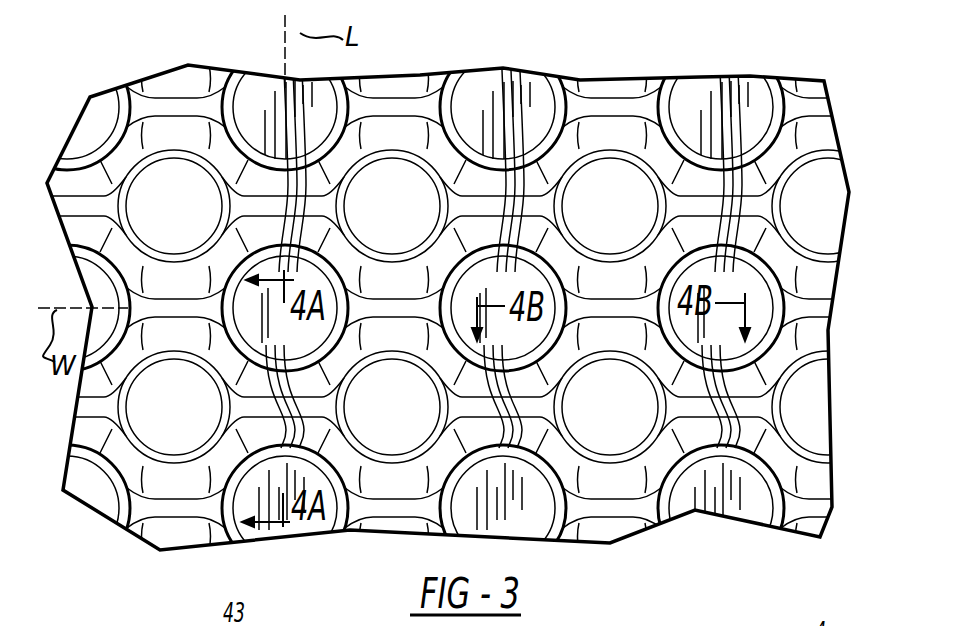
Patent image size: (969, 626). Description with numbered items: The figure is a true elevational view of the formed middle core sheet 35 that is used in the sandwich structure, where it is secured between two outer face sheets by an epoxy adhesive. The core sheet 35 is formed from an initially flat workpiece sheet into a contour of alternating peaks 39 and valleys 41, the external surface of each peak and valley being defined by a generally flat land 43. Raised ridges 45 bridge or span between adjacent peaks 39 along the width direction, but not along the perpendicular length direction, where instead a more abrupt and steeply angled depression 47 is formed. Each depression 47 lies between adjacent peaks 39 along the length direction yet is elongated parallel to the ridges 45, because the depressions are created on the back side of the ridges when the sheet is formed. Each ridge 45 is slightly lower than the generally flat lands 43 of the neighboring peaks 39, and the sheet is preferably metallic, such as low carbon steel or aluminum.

The middle core sheet 35 is at (702, 58).
The peaks 39 is at (541, 98).
The valleys 41 is at (177, 187).
The generally flat land 43 is at (753, 292).
The raised ridges 45 is at (620, 300).
The depression 47 is at (282, 200).